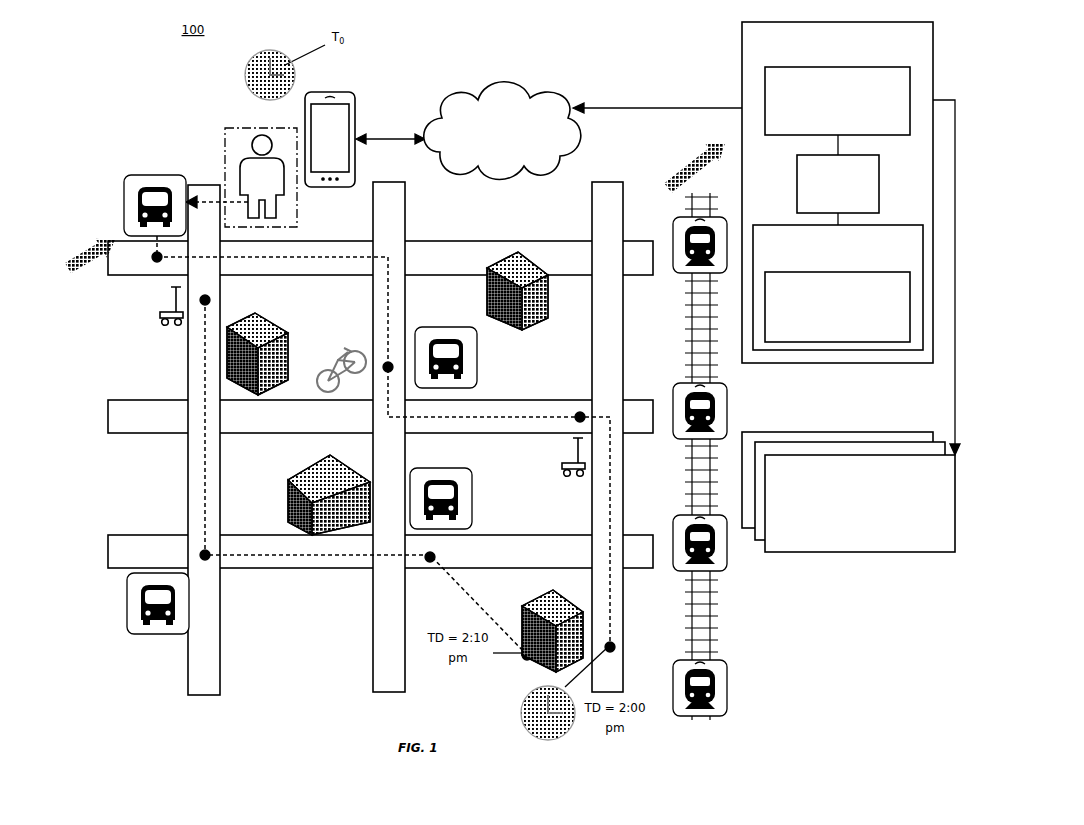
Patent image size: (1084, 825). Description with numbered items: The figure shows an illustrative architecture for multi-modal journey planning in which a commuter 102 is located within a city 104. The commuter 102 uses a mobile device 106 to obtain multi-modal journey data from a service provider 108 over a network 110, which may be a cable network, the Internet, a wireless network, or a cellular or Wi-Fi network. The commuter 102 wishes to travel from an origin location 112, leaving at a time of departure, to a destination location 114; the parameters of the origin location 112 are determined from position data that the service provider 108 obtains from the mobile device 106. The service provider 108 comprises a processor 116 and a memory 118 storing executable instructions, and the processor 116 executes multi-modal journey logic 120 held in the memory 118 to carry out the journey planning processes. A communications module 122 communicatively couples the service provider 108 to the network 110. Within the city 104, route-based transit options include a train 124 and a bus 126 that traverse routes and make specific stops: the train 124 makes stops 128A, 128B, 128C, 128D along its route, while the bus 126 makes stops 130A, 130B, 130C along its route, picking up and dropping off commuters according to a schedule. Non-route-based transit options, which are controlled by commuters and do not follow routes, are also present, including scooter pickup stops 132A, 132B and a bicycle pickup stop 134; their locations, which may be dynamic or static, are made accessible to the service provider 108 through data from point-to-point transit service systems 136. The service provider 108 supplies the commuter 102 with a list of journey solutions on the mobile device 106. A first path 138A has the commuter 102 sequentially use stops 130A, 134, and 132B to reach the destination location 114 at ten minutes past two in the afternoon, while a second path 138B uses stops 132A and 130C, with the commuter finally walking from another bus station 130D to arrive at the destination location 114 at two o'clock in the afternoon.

The commuter 102 is at (260, 178).
The city 104 is at (380, 418).
The mobile device 106 is at (333, 132).
The service provider 108 is at (837, 192).
The network 110 is at (502, 131).
The origin location 112 is at (228, 166).
The destination location 114 is at (541, 624).
The processor 116 is at (838, 184).
The memory 118 is at (838, 287).
The multi-modal journey logic 120 is at (837, 307).
The communications module 122 is at (837, 101).
The train 124 is at (703, 152).
The bus 126 is at (78, 280).
The train stop 128A is at (684, 278).
The train stop 128B is at (672, 432).
The train stop 128C is at (672, 570).
The train stop 128D is at (725, 672).
The bus stop 130A is at (133, 176).
The bus stop 130B is at (478, 343).
The bus stop 130C is at (138, 573).
The bus station 130D is at (466, 500).
The scooter pickup stop 132A is at (146, 327).
The scooter pickup stop 132B is at (548, 478).
The bicycle pickup stop 134 is at (339, 327).
The point-to-point transit service system 136 is at (848, 492).
The first path 138A is at (389, 257).
The second path 138B is at (206, 510).